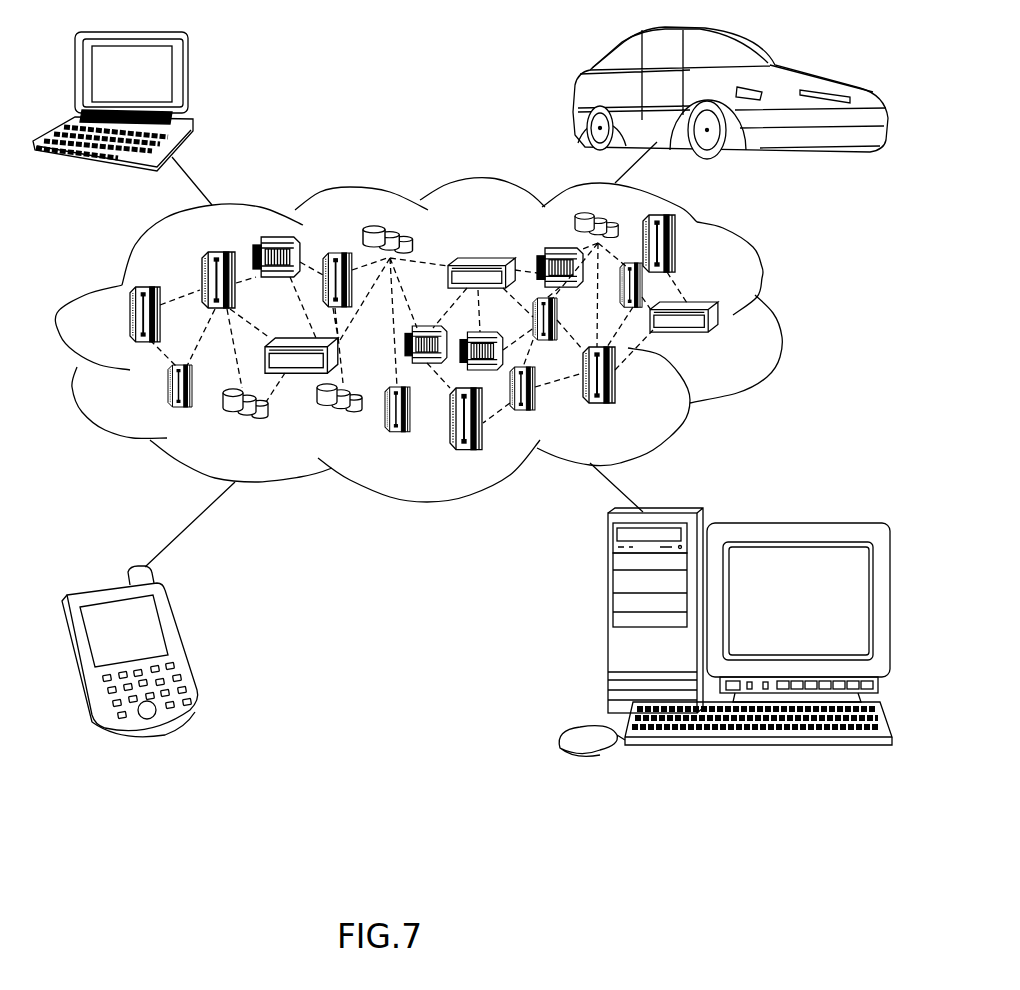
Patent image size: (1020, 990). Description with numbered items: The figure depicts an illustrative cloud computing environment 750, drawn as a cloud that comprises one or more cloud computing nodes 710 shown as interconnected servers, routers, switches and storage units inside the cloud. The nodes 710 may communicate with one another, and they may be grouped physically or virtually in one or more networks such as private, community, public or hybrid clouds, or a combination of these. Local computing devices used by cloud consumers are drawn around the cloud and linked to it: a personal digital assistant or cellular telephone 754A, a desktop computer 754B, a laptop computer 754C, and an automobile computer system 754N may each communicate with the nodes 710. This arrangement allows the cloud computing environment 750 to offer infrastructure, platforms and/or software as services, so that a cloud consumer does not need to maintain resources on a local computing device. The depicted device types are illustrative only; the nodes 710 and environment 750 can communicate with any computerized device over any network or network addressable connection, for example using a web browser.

The cloud computing environment 750 is at (762, 278).
The cloud computing nodes 710 is at (748, 342).
The personal digital assistant (PDA) or cellular telephone 754A is at (178, 643).
The desktop computer 754B is at (607, 623).
The laptop computer 754C is at (188, 80).
The automobile computer system 754N is at (575, 86).